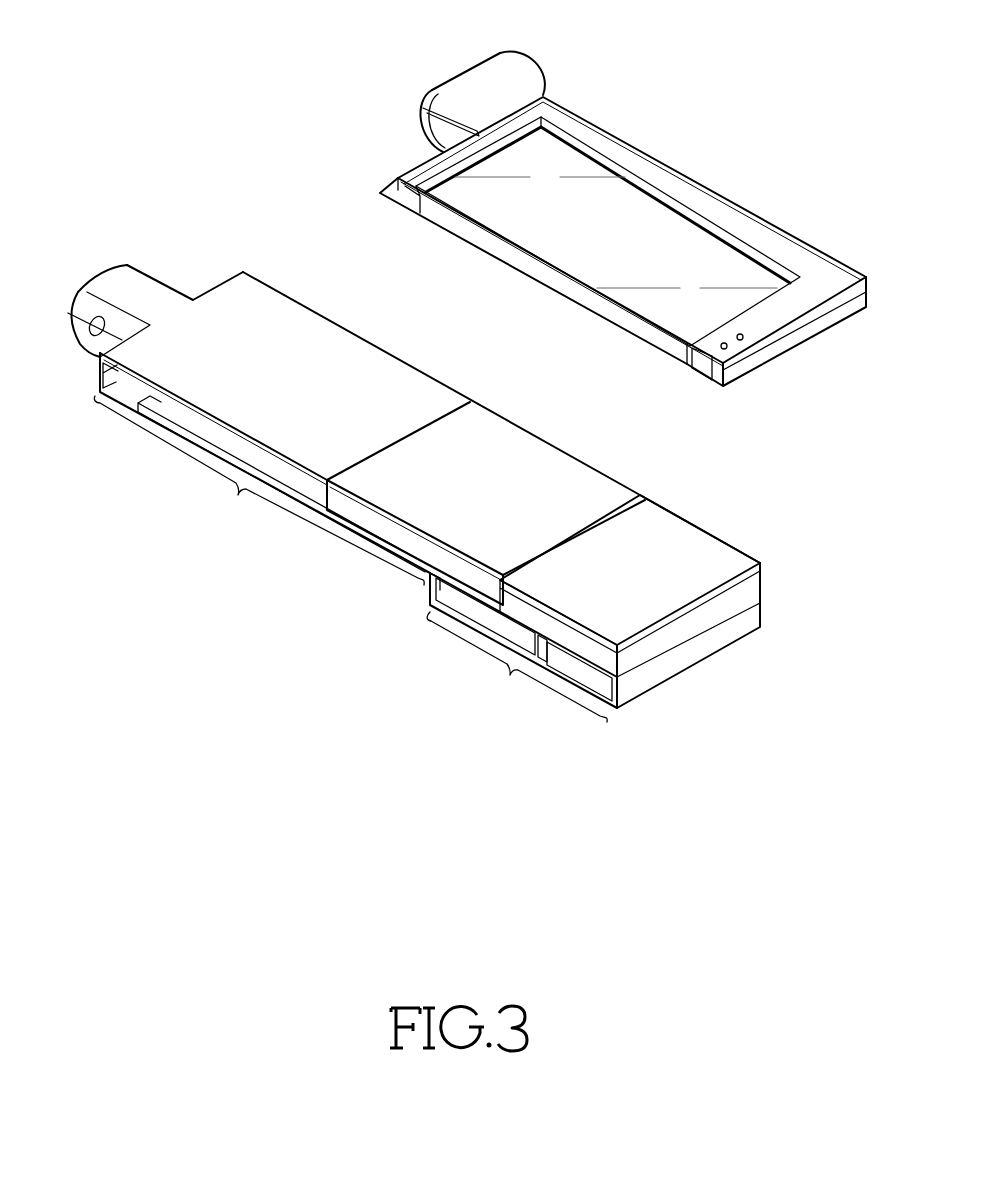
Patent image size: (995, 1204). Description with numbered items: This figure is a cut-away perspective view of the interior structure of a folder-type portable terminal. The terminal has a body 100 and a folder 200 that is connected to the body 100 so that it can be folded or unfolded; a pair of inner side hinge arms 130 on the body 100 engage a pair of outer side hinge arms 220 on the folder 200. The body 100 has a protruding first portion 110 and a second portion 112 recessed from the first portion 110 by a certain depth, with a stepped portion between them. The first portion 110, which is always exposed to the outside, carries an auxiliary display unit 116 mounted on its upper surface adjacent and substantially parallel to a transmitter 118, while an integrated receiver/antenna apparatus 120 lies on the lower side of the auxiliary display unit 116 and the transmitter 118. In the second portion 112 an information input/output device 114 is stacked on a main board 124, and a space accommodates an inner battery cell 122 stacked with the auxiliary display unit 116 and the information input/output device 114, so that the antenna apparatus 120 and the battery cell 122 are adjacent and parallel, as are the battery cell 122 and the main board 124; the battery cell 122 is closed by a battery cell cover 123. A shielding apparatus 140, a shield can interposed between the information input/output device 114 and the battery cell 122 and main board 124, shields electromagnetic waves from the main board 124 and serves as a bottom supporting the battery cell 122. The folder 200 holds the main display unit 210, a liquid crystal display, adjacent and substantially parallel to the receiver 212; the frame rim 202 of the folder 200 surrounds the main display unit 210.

The body 100 is at (224, 636).
The first portion 110 is at (522, 647).
The second portion 112 is at (262, 469).
The information input/output device 114 is at (333, 522).
The auxiliary display unit 116 is at (472, 613).
The transmitter 118 is at (583, 677).
The integrated receiver/antenna apparatus 120 is at (600, 657).
The inner battery cell 122 is at (393, 538).
The battery cell cover 123 is at (547, 441).
The main board 124 is at (207, 437).
The inner side hinge arms 130 is at (112, 284).
The shielding apparatus 140 is at (153, 422).
The folder 200 is at (814, 154).
The frame rim 202 is at (393, 378).
The main display unit 210 is at (647, 200).
The receiver 212 is at (708, 371).
The outer side hinge arms 220 is at (473, 79).